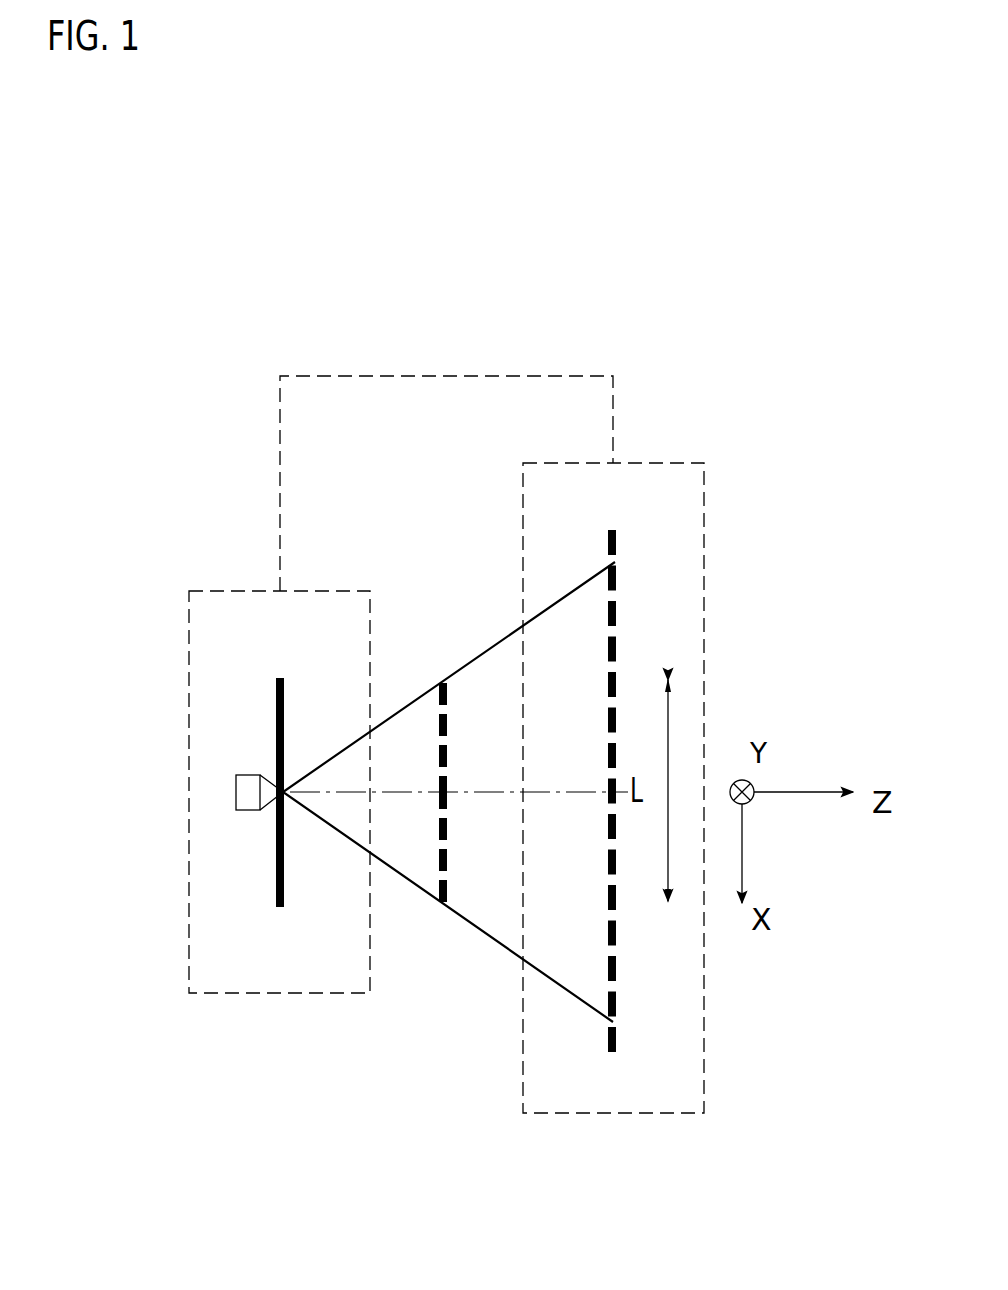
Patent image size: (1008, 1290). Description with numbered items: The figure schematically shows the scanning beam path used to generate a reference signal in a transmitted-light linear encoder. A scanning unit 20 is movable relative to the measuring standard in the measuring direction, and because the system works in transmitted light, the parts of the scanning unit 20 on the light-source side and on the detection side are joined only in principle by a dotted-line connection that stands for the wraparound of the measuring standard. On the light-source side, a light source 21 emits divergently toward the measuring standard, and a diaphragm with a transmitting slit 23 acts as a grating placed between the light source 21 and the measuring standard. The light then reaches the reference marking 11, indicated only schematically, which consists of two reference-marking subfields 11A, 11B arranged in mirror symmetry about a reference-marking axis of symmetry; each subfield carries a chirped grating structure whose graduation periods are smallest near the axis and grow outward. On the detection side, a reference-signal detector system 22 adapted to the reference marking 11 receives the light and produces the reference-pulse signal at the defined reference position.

The reference marking 11 is at (442, 783).
The reference-marking subfield 11A is at (448, 720).
The reference-marking subfield 11B is at (447, 855).
The scanning unit 20 is at (170, 978).
The light source 21 is at (243, 785).
The reference-signal detector system 22 is at (615, 580).
The transmitting slit 23 is at (276, 873).